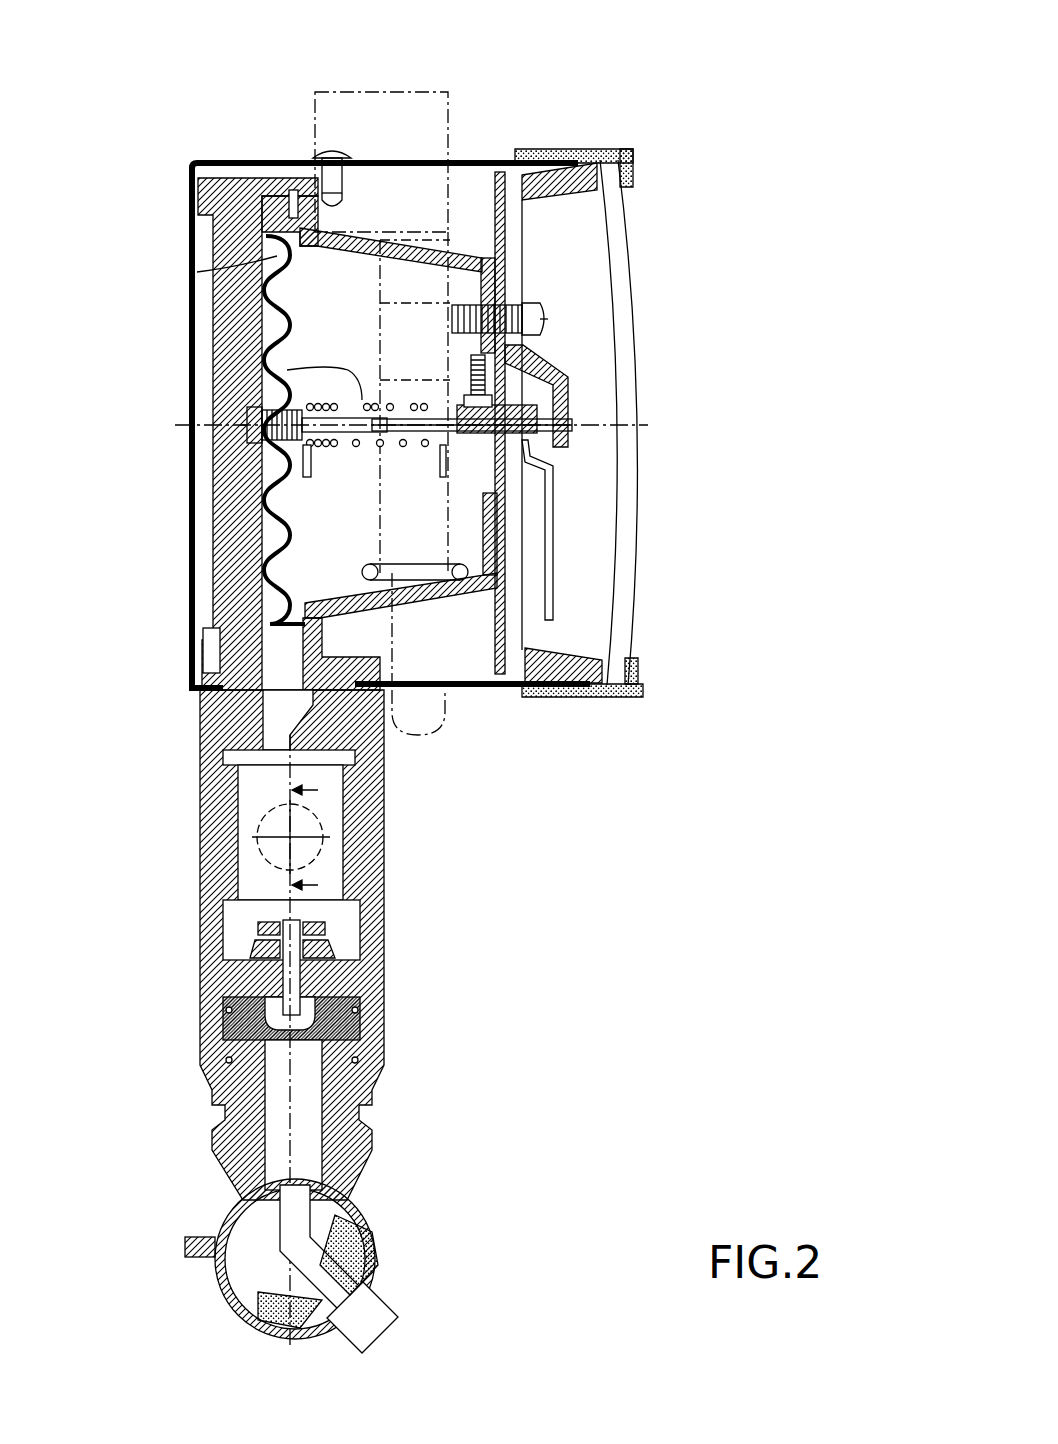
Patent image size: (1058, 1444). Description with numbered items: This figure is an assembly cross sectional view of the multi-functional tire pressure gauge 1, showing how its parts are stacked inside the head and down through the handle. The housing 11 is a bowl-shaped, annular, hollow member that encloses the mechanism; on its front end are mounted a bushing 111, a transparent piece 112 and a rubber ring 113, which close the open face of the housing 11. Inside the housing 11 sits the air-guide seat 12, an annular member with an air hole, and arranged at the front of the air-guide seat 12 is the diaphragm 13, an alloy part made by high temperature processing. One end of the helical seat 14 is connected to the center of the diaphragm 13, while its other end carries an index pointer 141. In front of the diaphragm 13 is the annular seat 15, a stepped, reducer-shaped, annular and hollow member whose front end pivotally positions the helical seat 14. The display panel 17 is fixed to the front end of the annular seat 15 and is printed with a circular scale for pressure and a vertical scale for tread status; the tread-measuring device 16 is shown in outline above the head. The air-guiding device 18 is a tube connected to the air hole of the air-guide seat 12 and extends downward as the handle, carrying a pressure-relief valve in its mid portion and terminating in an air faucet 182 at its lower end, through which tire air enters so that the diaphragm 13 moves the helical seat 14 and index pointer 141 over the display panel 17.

The multi-functional tire pressure gauge 1 is at (668, 165).
The housing 11 is at (205, 160).
The air-guide seat 12 is at (279, 196).
The diaphragm 13 is at (188, 274).
The helical seat 14 is at (260, 373).
The annular seat 15 is at (474, 258).
The tread-measuring device 16 is at (385, 90).
The display panel 17 is at (506, 226).
The air-guiding device 18 is at (382, 831).
The bushing 111 is at (566, 148).
The transparent piece 112 is at (616, 258).
The rubber ring 113 is at (612, 146).
The index pointer 141 is at (549, 555).
The air faucet 182 is at (340, 1217).